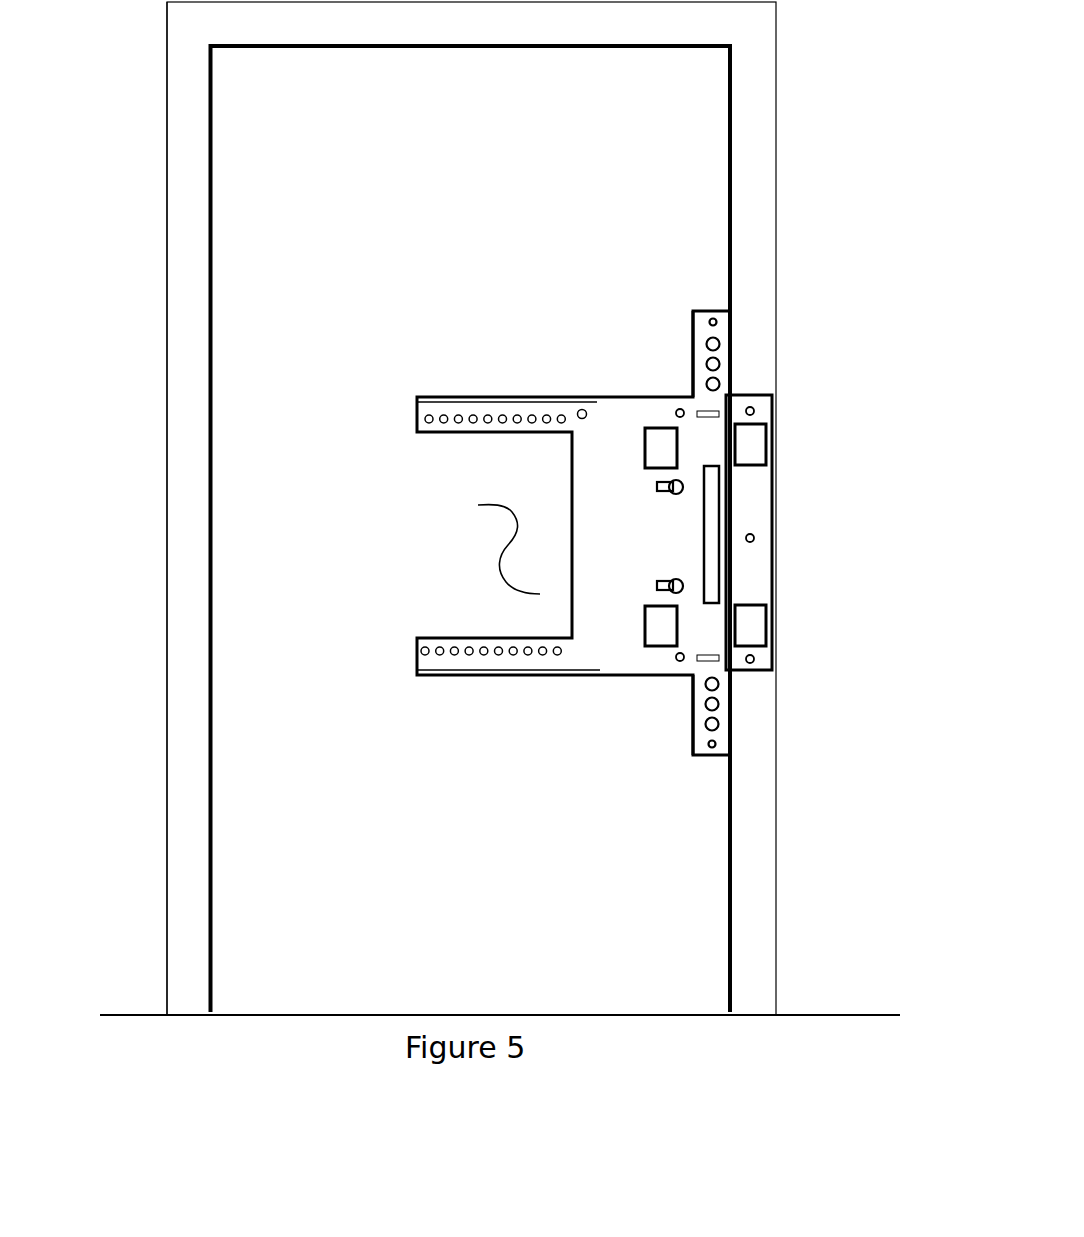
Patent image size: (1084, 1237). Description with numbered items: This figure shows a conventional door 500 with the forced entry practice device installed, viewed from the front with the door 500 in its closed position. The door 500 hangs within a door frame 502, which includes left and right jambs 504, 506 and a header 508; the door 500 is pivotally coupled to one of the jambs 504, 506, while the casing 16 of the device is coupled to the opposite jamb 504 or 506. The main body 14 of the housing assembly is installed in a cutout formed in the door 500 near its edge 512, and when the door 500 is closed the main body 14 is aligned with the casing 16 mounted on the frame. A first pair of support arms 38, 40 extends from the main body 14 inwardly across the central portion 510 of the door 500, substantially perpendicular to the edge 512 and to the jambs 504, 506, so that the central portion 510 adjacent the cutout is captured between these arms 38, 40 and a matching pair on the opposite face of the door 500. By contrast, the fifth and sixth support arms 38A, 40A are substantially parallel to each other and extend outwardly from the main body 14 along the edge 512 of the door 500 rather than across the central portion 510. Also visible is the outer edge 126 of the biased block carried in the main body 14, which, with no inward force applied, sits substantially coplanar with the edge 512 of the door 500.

The main body 14 is at (642, 523).
The casing 16 is at (760, 512).
The first support arm 38 is at (460, 663).
The fifth support arm 38A is at (698, 737).
The second support arm 40 is at (470, 400).
The sixth support arm 40A is at (697, 330).
The outer edge 126 is at (724, 583).
The door 500 is at (491, 516).
The door frame 502 is at (153, 805).
The left jamb 504 is at (190, 568).
The right jamb 506 is at (748, 242).
The header 508 is at (428, 20).
The central portion 510 is at (507, 540).
The edge 512 is at (733, 815).